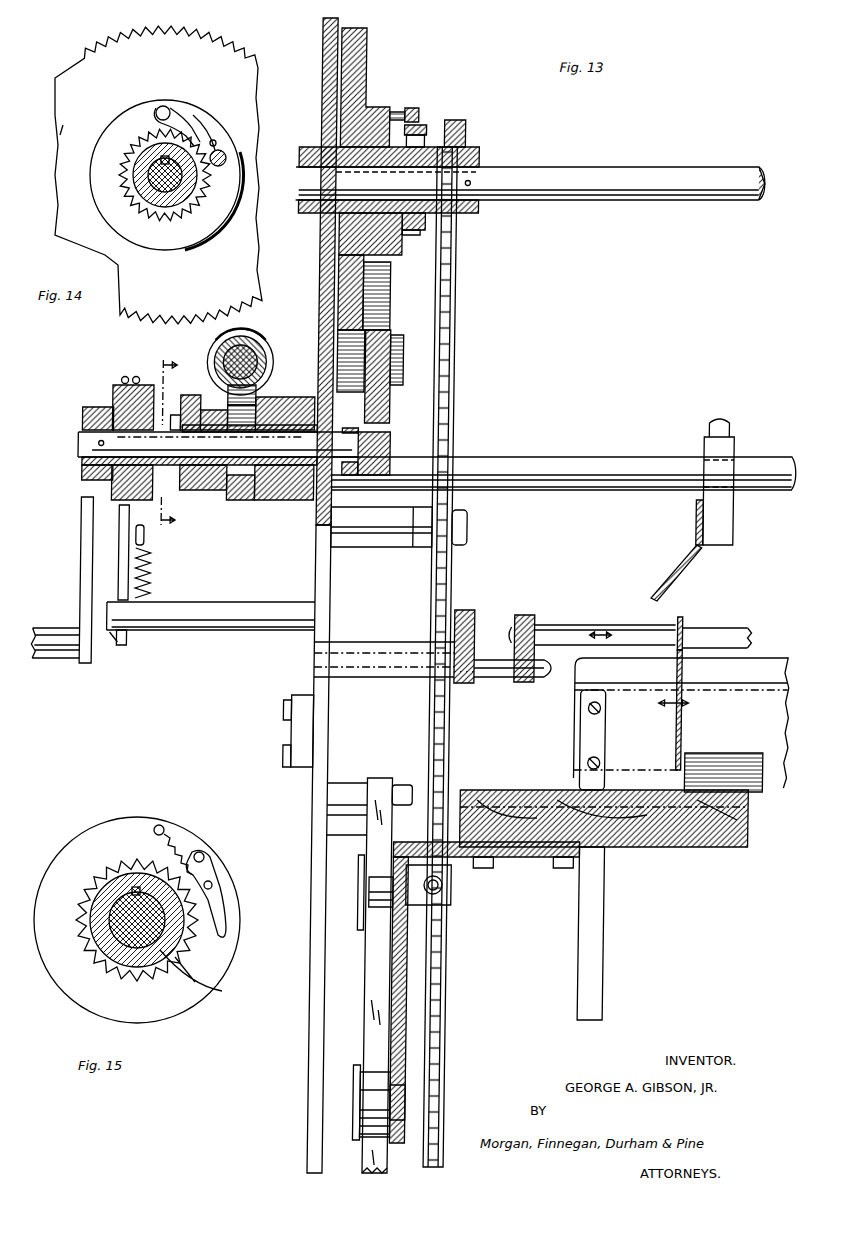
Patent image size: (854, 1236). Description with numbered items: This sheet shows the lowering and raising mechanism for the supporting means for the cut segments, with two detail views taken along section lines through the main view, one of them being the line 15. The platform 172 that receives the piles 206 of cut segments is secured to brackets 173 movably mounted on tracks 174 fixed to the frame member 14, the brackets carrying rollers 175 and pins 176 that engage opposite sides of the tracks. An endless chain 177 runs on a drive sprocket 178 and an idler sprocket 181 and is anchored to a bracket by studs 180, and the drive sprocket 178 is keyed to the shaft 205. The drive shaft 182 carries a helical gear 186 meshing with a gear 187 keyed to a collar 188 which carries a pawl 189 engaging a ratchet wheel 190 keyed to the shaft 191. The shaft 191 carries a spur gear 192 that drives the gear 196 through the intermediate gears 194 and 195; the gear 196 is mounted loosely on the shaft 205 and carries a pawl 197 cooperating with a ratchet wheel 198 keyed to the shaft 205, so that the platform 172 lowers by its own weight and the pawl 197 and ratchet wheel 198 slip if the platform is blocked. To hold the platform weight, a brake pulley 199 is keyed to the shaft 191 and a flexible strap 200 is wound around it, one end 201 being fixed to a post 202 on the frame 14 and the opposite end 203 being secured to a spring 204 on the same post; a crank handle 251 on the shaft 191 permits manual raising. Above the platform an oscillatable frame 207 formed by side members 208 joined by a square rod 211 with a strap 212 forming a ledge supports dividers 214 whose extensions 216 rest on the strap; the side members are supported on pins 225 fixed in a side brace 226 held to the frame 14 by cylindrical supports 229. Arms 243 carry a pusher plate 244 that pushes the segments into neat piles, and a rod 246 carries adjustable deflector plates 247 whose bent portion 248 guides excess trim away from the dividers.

In FIG. 13, the frame member 14 is at (315, 40).
In FIG. 13, the section line 15 is at (168, 434).
In FIG. 13, the platform 172 is at (720, 842).
In FIG. 13, the brackets 173 is at (412, 997).
In FIG. 13, the tracks or rails 174 is at (380, 778).
In FIG. 13, the rollers 175 is at (365, 882).
In FIG. 13, the pins 176 is at (375, 905).
In FIG. 13, the endless chain 177 is at (453, 296).
In FIG. 13, the drive sprocket 178 is at (463, 155).
In FIG. 13, the studs 180 is at (457, 885).
In FIG. 13, the idler sprocket 181 is at (415, 548).
In FIG. 13, the drive shaft 182 is at (246, 345).
In FIG. 13, the helical gear 186 is at (253, 355).
In FIG. 13, the gear 187 is at (242, 500).
In FIG. 13, the collar 188 is at (232, 492).
In FIG. 15, the collar 188 is at (78, 855).
In FIG. 15, the pawl 189 is at (214, 902).
In FIG. 13, the ratchet wheel 190 is at (184, 497).
In FIG. 15, the ratchet wheel 190 is at (203, 974).
In FIG. 13, the shaft 191 is at (78, 438).
In FIG. 15, the shaft 191 is at (130, 935).
In FIG. 13, the spur gear 192 is at (384, 448).
In FIG. 13, the intermediate gear 194 is at (342, 378).
In FIG. 13, the intermediate gear 195 is at (383, 405).
In FIG. 13, the gear 196 is at (358, 82).
In FIG. 14, the gear 196 is at (105, 60).
In FIG. 13, the pawl 197 is at (398, 108).
In FIG. 14, the pawl 197 is at (180, 113).
In FIG. 13, the ratchet wheel 198 is at (403, 235).
In FIG. 14, the ratchet wheel 198 is at (188, 205).
In FIG. 13, the brake pulley 199 is at (109, 400).
In FIG. 13, the flexible strap 200 is at (130, 377).
In FIG. 13, the end 201 is at (124, 647).
In FIG. 13, the post 202 is at (214, 633).
In FIG. 13, the opposite end 203 is at (145, 540).
In FIG. 13, the spring 204 is at (150, 582).
In FIG. 13, the shaft 205 is at (612, 170).
In FIG. 14, the shaft 205 is at (145, 177).
In FIG. 13, the piles 206 is at (745, 775).
In FIG. 13, the oscillatable frame 207 is at (575, 625).
In FIG. 13, the side members 208 is at (525, 615).
In FIG. 13, the square rod 211 is at (736, 630).
In FIG. 13, the strap 212 is at (700, 637).
In FIG. 13, the dividers 214 is at (690, 703).
In FIG. 13, the extensions 216 is at (677, 626).
In FIG. 13, the pins 225 is at (497, 682).
In FIG. 13, the side brace 226 is at (463, 610).
In FIG. 13, the cylindrical supports 229 is at (374, 645).
In FIG. 13, the arms 243 is at (580, 735).
In FIG. 13, the pusher plate 244 is at (742, 663).
In FIG. 13, the rod 246 is at (620, 458).
In FIG. 13, the deflector plates 247 is at (693, 517).
In FIG. 13, the bent portion 248 is at (672, 572).
In FIG. 13, the crank handle 251 is at (79, 598).